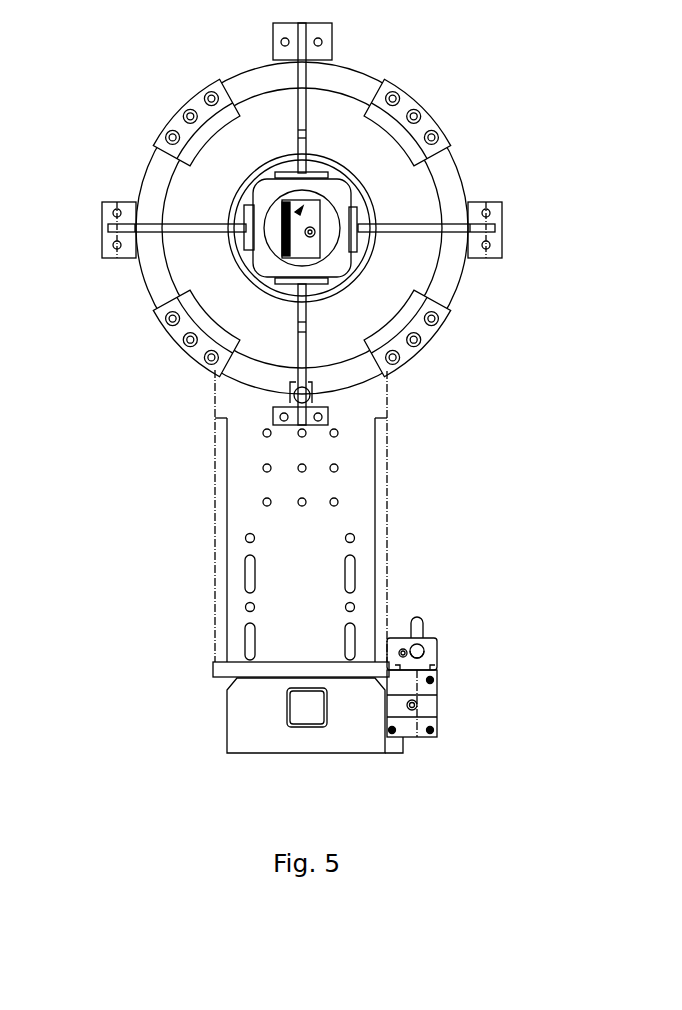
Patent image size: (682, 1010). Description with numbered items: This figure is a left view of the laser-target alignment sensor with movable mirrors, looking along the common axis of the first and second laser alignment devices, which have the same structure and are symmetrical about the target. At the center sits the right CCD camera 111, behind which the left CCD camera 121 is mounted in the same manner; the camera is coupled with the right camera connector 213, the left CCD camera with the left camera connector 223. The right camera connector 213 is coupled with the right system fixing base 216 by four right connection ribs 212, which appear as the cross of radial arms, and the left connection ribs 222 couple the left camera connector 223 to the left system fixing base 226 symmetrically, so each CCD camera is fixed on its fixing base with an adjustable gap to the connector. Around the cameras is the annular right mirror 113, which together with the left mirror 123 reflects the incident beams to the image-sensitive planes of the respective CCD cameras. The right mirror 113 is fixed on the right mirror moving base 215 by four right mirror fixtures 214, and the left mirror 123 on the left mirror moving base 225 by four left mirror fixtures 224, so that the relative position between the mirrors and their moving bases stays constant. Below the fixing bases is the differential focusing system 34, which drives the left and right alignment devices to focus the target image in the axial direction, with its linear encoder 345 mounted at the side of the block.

The right CCD camera 111 is at (190, 151).
The left CCD camera 121 is at (283, 202).
The right camera connector 213 is at (407, 162).
The left camera connector 223 is at (347, 192).
The right mirror 113 is at (348, 195).
The left mirror 123 is at (395, 285).
The right mirror moving base 215 is at (265, 208).
The left mirror moving base 225 is at (155, 283).
The right mirror fixture 214 is at (370, 246).
The left mirror fixture 224 is at (415, 327).
The right connection rib 212 is at (177, 404).
The left connection rib 222 is at (303, 348).
The right system fixing base 216 is at (400, 523).
The left system fixing base 226 is at (347, 493).
The differential focusing system 34 is at (272, 728).
The linear encoder 345 is at (420, 692).